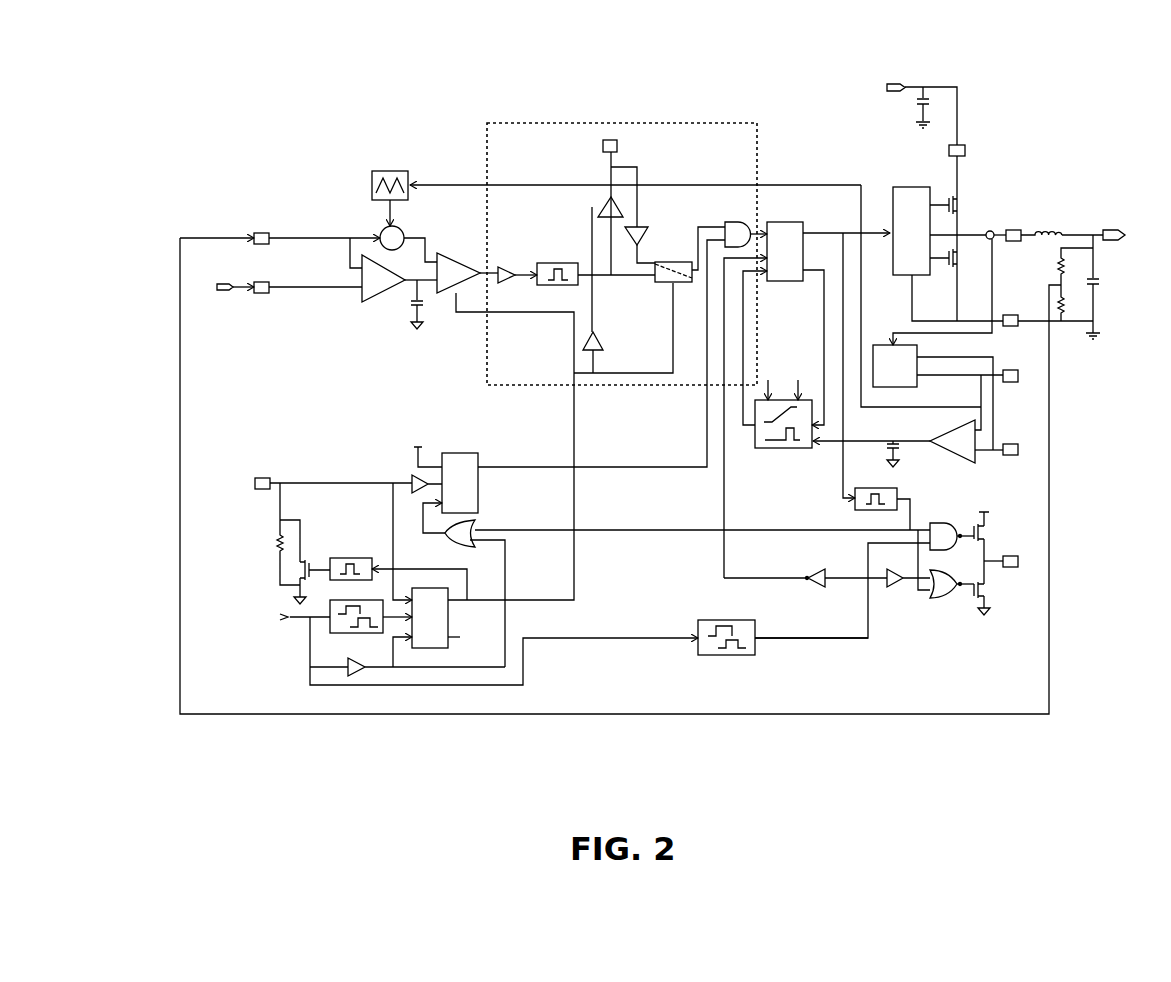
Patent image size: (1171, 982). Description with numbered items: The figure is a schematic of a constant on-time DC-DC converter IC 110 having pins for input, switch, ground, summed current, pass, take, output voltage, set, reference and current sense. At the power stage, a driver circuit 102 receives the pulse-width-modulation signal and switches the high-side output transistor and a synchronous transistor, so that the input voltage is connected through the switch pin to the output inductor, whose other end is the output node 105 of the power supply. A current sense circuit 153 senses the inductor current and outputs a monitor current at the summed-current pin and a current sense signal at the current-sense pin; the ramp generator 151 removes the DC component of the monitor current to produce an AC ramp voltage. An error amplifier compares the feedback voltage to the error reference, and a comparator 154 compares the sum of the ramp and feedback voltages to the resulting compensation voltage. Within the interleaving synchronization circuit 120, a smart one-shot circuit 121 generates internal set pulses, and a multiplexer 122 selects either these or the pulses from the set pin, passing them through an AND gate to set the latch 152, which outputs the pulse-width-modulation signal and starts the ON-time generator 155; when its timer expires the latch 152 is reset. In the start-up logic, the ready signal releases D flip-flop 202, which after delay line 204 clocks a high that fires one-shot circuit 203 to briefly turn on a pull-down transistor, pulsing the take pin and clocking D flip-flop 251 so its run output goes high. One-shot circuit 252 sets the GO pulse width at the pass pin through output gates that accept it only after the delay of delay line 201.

The converter 110 is at (262, 97).
The ramp generator 151 is at (404, 171).
The interleaving synchronization circuit 120 is at (531, 123).
The smart one-shot circuit 121 is at (538, 263).
The multiplexer 122 is at (672, 262).
The latch 152 is at (786, 222).
The driver circuit 102 is at (921, 187).
The node 105 is at (1118, 230).
The comparator 154 is at (458, 270).
The current sense circuit 153 is at (899, 372).
The ON-time generator 155 is at (757, 447).
The D flip-flop 251 is at (463, 453).
The one-shot circuit 252 is at (892, 488).
The delay line 201 is at (710, 620).
The D flip-flop 202 is at (448, 614).
The one-shot circuit 203 is at (367, 558).
The delay line 204 is at (377, 633).